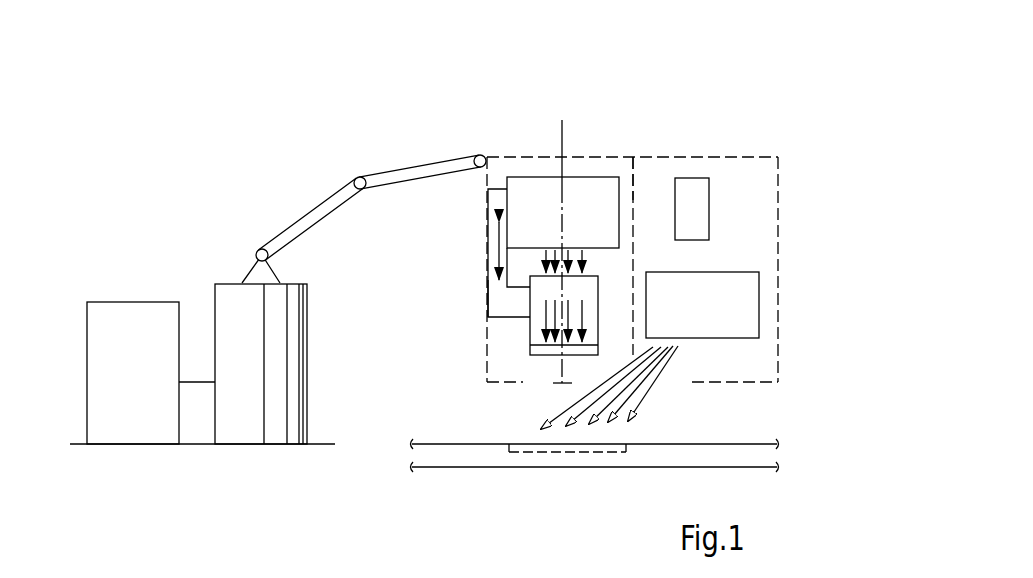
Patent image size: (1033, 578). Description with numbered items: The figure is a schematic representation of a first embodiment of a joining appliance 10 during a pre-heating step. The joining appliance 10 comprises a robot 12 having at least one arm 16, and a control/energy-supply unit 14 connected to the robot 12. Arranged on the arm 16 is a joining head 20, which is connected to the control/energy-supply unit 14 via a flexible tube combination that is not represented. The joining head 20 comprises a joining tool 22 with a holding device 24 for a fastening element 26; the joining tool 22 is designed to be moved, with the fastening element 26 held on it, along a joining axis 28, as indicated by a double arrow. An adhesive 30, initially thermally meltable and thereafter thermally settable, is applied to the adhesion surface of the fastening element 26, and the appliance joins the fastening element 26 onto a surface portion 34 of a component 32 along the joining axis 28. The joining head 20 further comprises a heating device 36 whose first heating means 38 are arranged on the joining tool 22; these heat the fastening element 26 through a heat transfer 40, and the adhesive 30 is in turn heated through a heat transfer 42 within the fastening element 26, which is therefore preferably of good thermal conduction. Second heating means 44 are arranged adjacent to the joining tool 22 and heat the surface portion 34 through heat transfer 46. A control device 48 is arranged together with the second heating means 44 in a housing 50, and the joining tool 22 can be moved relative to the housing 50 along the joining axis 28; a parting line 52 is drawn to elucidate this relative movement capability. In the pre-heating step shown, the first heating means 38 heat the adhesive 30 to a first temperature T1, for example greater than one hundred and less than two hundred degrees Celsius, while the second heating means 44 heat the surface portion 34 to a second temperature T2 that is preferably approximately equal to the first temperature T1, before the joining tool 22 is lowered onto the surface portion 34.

The joining appliance 10 is at (257, 162).
The robot 12 is at (231, 278).
The control/energy-supply unit 14 is at (140, 300).
The arm 16 is at (342, 192).
The joining head 20 is at (749, 150).
The joining tool 22 is at (593, 167).
The holding device 24 is at (503, 302).
The fastening element 26 is at (524, 333).
The joining axis 28 is at (560, 132).
The adhesive 30 is at (545, 350).
The component 32 is at (433, 455).
The surface portion 34 is at (537, 455).
The heating device 36 is at (664, 137).
The first heating means 38 is at (528, 197).
The heat transfer 40 is at (582, 257).
The heat transfer 42 is at (583, 313).
The second heating means 44 is at (737, 313).
The heat transfer 46 is at (647, 398).
The control device 48 is at (698, 208).
The housing 50 is at (779, 205).
The parting line 52 is at (633, 210).
The first temperature T1 is at (553, 352).
The second temperature T2 is at (583, 446).